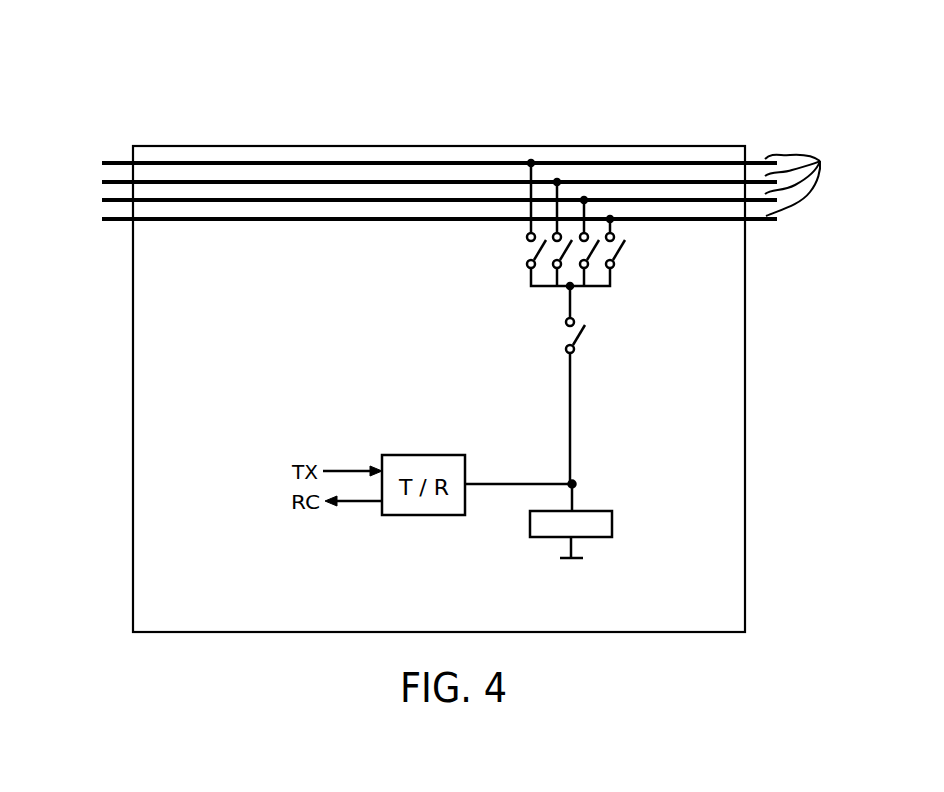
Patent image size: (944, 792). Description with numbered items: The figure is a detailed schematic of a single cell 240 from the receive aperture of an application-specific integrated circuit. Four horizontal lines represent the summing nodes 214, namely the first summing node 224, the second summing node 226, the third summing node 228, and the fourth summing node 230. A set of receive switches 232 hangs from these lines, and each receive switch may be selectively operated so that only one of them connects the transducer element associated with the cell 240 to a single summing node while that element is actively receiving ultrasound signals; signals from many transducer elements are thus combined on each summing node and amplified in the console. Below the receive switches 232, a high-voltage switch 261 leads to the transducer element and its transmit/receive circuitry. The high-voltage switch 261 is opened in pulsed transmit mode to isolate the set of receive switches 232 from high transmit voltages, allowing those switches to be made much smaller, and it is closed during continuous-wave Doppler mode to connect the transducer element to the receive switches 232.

The cell 240 is at (740, 64).
The first summing node 224 is at (117, 161).
The second summing node 226 is at (108, 180).
The third summing node 228 is at (109, 202).
The fourth summing node 230 is at (109, 222).
The summing nodes 214 is at (805, 174).
The set of receive switches 232 is at (612, 278).
The high-voltage switch 261 is at (584, 334).